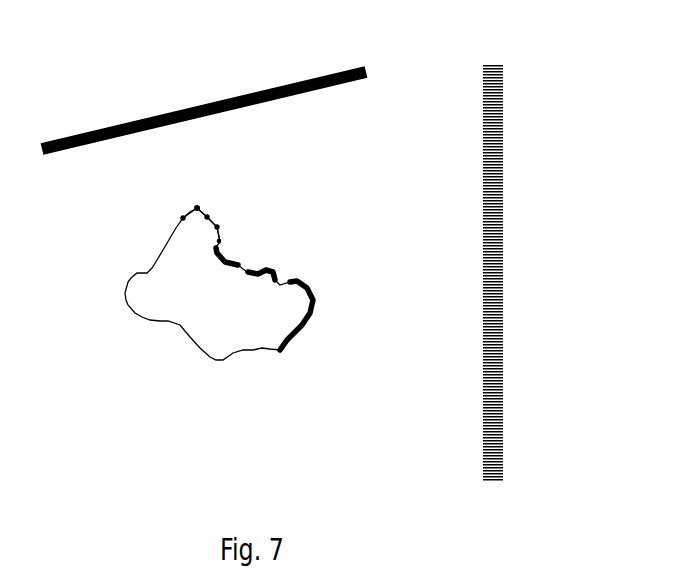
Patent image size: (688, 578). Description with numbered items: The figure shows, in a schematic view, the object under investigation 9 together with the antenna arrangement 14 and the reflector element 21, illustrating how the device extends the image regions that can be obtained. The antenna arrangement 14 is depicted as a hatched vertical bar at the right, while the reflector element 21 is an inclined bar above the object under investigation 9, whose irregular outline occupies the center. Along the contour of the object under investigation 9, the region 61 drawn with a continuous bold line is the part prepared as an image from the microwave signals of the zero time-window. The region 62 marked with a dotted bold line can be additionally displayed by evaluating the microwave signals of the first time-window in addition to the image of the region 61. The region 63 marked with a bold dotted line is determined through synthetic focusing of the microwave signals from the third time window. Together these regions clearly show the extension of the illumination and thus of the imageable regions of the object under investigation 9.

The reflector element 21 is at (100, 130).
The antenna arrangement 14 is at (500, 233).
The object under investigation 9 is at (182, 317).
The region drawn with a continuous bold line 61 is at (308, 320).
The region marked with a dotted bold line 62 is at (238, 265).
The region marked with a bold dotted line 63 is at (205, 213).